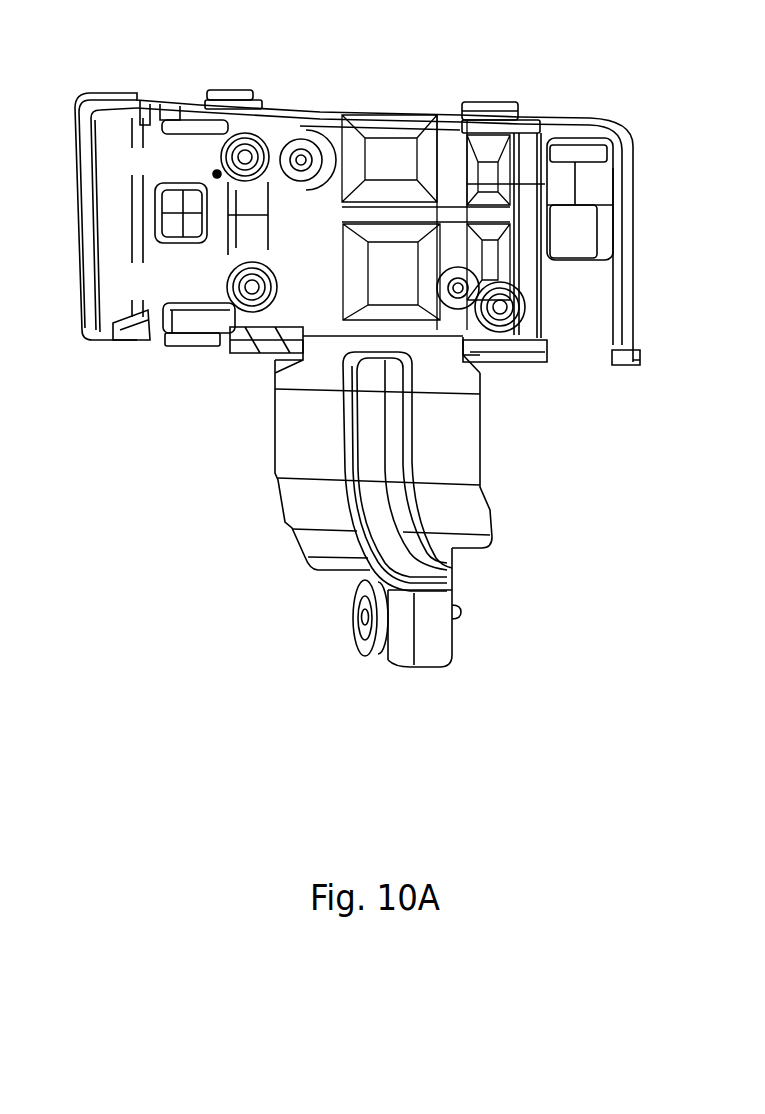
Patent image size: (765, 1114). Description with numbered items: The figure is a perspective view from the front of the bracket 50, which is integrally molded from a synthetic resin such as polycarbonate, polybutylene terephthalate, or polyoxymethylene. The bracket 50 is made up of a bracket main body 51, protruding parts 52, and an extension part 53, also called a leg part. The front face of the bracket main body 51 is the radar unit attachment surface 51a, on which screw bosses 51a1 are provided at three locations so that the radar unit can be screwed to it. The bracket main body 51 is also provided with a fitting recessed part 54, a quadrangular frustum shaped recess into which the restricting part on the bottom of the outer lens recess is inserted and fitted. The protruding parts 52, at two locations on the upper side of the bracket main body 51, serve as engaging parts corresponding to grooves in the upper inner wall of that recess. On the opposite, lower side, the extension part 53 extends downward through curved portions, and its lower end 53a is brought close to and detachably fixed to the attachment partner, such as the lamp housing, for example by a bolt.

The bracket 50 is at (371, 88).
The bracket main body 51 is at (318, 110).
The radar unit attachment surface 51a is at (433, 110).
The screw bosses 51a1 is at (218, 153).
The protruding part 52 is at (228, 88).
The extension part 53 is at (274, 445).
The lower end 53a is at (425, 664).
The fitting recessed part 54 is at (145, 206).